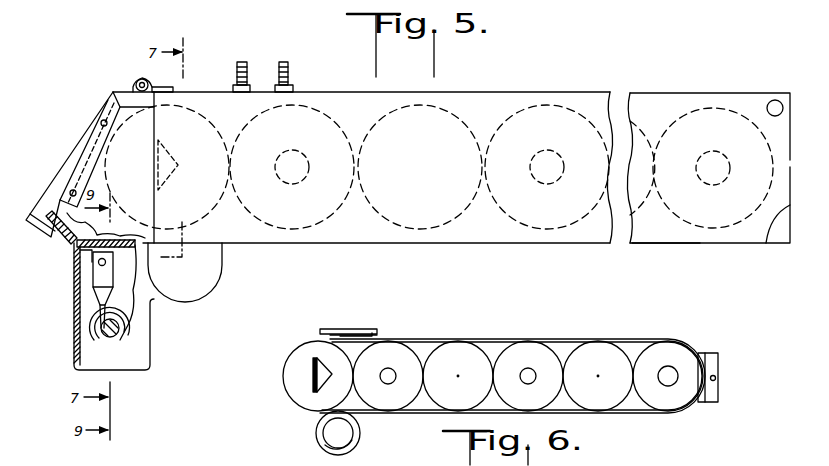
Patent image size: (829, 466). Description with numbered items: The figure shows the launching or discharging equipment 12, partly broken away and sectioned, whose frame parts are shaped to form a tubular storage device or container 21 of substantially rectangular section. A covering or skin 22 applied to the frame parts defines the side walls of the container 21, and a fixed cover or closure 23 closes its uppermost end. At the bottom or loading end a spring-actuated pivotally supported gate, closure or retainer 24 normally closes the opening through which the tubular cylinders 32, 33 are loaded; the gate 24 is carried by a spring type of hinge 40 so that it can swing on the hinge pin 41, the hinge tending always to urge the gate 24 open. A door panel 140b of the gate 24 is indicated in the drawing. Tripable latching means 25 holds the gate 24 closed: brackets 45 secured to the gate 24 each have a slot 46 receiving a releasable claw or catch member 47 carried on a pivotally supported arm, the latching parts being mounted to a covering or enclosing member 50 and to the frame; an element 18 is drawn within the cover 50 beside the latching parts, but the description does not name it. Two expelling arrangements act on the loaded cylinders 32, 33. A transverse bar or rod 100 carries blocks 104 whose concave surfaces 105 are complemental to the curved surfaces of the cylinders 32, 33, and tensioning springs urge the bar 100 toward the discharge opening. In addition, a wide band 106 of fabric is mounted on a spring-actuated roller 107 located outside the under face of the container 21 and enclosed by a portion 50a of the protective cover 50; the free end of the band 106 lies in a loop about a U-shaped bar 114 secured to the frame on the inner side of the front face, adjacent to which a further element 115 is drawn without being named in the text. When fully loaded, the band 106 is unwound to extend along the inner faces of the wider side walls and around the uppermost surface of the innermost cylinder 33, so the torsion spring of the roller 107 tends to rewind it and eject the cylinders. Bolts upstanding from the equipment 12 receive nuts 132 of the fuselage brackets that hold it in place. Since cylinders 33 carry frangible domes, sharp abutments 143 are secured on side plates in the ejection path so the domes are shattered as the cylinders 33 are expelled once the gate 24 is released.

In FIG. 5, the launching or discharging equipment 12 is at (472, 230).
In FIG. 6, the launching or discharging equipment 12 is at (358, 331).
In FIG. 5, the cylinder 18 is at (109, 271).
In FIG. 5, the storage device or container 21 is at (263, 243).
In FIG. 5, the covering or skin 22 is at (668, 247).
In FIG. 5, the fixed cover or closure 23 is at (766, 243).
In FIG. 5, the gate, closure or retainer 24 is at (65, 165).
In FIG. 5, the tripable latching means 25 is at (77, 312).
In FIG. 5, the tubular cylinders 32 is at (187, 113).
In FIG. 6, the tubular cylinders 32 is at (298, 352).
In FIG. 6, the tubular cylinders 33 is at (447, 353).
In FIG. 5, the spring type hinge 40 is at (162, 80).
In FIG. 5, the hinge pin 41 is at (135, 85).
In FIG. 5, the brackets 45 is at (62, 240).
In FIG. 5, the slot 46 is at (78, 253).
In FIG. 5, the releasable claw or catch member 47 is at (88, 295).
In FIG. 5, the covering or enclosing member 50 is at (145, 357).
In FIG. 5, the portion of the protective cover 50a is at (200, 303).
In FIG. 6, the bar or rod 100 is at (717, 380).
In FIG. 6, the blocks 104 is at (712, 358).
In FIG. 6, the concave surfaces 105 is at (718, 367).
In FIG. 6, the band 106 is at (412, 417).
In FIG. 6, the spring-actuated roller 107 is at (355, 443).
In FIG. 6, the U-shaped bar 114 is at (327, 330).
In FIG. 6, the guide lip 115 is at (348, 330).
In FIG. 5, the nuts 132 is at (247, 75).
In FIG. 5, the door panel 140b is at (53, 190).
In FIG. 5, the sharp glass breaker or sharp abutment 143 is at (168, 158).
In FIG. 6, the sharp glass breaker or sharp abutment 143 is at (323, 392).